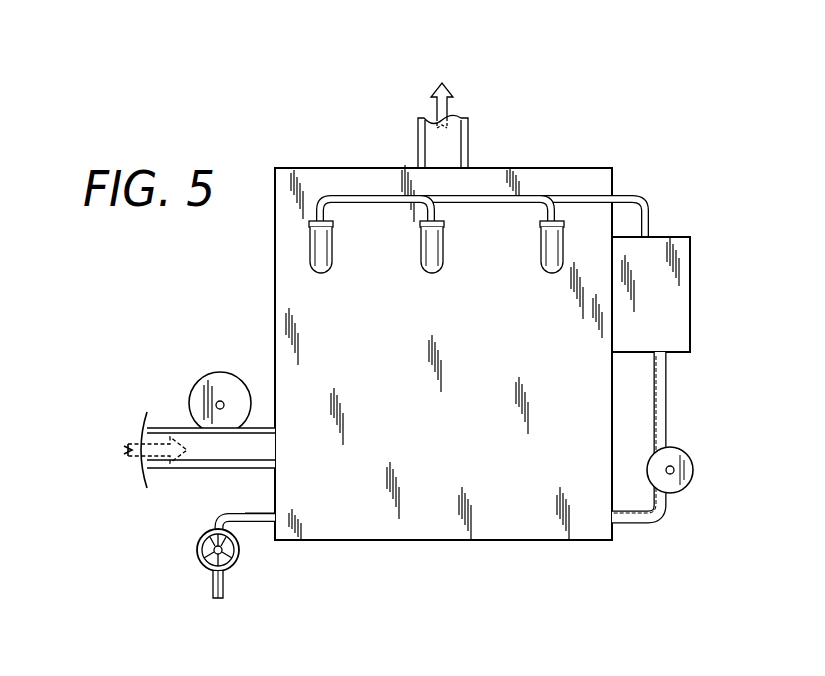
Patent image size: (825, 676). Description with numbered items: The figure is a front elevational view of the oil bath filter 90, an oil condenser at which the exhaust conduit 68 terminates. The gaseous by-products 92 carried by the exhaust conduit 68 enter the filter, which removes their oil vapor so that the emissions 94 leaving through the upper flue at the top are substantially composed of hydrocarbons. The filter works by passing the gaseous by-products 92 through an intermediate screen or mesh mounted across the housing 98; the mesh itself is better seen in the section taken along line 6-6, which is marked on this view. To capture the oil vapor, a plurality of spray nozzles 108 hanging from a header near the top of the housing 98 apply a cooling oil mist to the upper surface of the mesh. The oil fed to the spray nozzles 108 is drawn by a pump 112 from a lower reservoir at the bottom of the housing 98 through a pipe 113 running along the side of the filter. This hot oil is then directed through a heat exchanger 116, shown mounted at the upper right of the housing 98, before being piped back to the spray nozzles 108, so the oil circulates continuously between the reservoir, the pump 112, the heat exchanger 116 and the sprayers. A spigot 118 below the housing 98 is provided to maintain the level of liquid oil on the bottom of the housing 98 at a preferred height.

The oil bath filter 90 is at (303, 122).
The gaseous by-products 92 is at (128, 455).
The emissions 94 is at (450, 86).
The housing 98 is at (273, 257).
The spray nozzles 108 is at (443, 240).
The pump 112 is at (693, 463).
The pipe 113 is at (667, 395).
The heat exchanger 116 is at (692, 308).
The spigot 118 is at (240, 552).
The exhaust conduit 68 is at (178, 470).
The section line 6- 6 is at (560, 140).